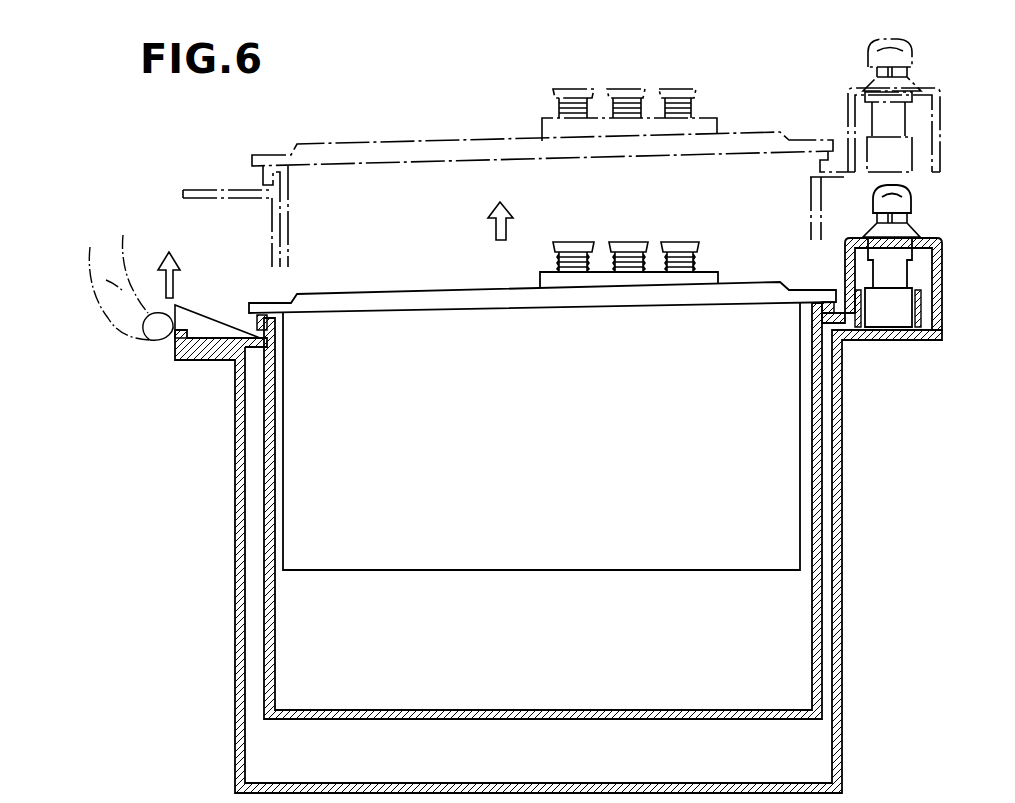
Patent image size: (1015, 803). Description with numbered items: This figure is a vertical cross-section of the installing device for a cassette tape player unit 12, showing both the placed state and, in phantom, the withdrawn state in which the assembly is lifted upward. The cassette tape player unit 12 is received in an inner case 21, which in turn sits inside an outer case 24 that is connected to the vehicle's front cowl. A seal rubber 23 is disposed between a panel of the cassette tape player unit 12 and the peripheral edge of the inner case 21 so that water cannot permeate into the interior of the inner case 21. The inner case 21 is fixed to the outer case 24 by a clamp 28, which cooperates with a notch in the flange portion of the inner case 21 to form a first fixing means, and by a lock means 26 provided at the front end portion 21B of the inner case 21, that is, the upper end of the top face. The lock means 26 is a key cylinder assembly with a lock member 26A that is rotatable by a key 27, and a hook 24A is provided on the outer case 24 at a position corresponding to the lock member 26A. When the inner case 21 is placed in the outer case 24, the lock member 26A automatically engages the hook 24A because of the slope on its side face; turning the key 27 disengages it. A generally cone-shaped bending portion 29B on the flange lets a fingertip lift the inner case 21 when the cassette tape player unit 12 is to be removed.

The cassette tape player unit 12 is at (526, 560).
The inner case 21 is at (264, 530).
The front end portion of the inner case 21B is at (931, 240).
The seal rubber 23 is at (257, 320).
The outer case 24 is at (588, 561).
The hook 24A is at (893, 297).
The lock means 26 is at (900, 273).
The lock member 26A is at (862, 296).
The key 27 is at (873, 201).
The clamp 28 is at (178, 344).
The bending portion 29B is at (195, 322).